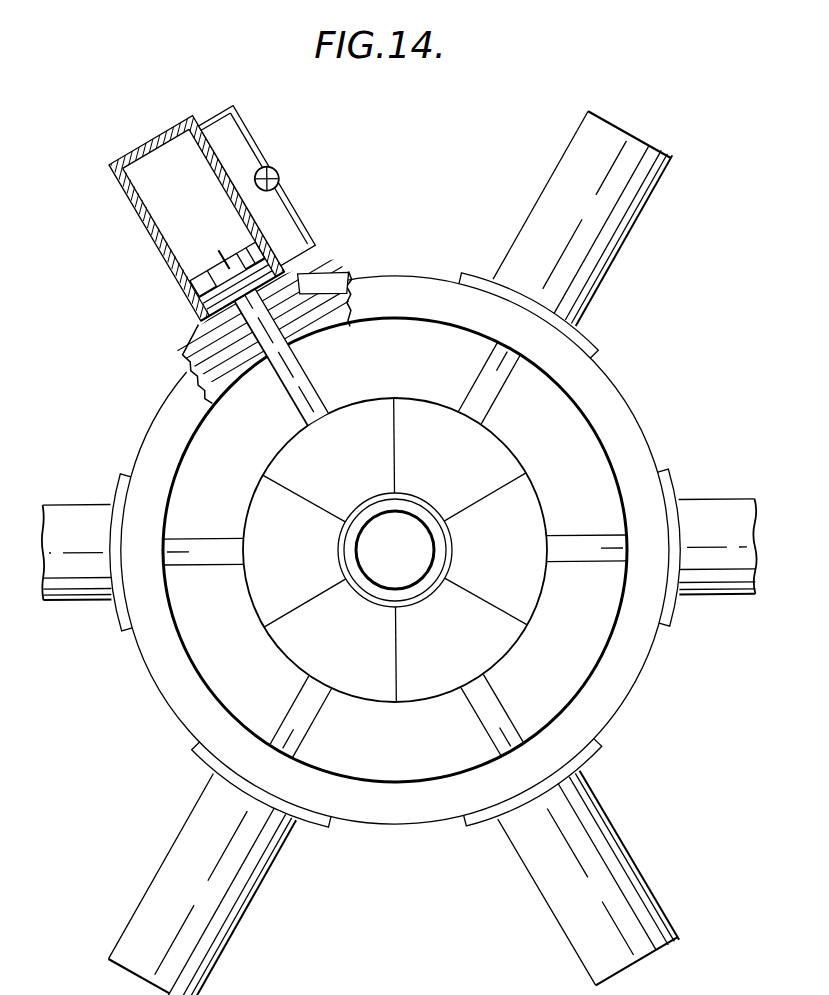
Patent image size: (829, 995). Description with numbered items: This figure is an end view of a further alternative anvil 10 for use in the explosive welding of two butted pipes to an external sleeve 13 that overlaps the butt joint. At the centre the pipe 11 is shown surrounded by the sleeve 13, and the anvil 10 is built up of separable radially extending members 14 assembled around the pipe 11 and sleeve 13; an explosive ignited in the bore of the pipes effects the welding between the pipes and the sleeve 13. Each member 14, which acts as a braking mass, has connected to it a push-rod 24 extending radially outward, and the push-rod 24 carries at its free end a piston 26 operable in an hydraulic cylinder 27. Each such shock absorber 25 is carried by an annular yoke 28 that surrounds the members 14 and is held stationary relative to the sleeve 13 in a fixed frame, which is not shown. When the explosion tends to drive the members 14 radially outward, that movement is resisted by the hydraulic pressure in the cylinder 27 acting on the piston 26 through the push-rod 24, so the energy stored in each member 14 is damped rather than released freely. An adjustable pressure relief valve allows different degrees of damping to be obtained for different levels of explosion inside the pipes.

The anvil 10 is at (385, 365).
The pipe 11 is at (412, 589).
The external sleeve 13 is at (433, 520).
The radially extending member 14 is at (314, 476).
The push-rod 24 is at (262, 328).
The shock absorber 25 is at (200, 110).
The piston 26 is at (210, 273).
The hydraulic cylinder 27 is at (170, 165).
The annular yoke 28 is at (157, 655).